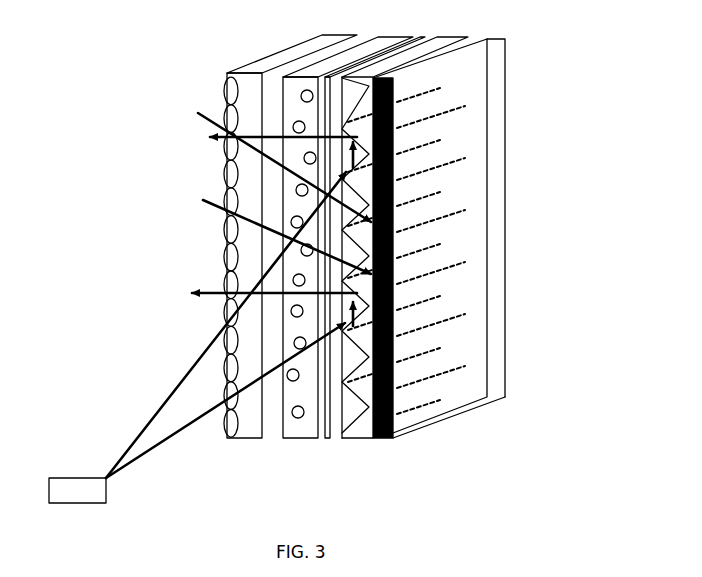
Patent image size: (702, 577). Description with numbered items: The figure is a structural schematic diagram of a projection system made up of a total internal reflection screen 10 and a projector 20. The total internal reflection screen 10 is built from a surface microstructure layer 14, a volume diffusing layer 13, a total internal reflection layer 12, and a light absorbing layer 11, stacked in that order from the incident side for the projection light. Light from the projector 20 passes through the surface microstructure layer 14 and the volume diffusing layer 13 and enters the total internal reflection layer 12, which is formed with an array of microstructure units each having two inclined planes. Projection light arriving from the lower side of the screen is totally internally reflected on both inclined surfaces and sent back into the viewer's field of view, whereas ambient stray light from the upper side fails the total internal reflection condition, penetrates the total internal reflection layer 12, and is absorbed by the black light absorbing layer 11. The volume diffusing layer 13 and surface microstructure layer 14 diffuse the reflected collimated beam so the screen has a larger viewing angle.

The total internal reflection screen 10 is at (203, 81).
The light absorbing layer 11 is at (465, 295).
The total internal reflection layer 12 is at (393, 438).
The volume diffusing layer 13 is at (300, 397).
The surface microstructure layer 14 is at (253, 183).
The projector 20 is at (83, 488).